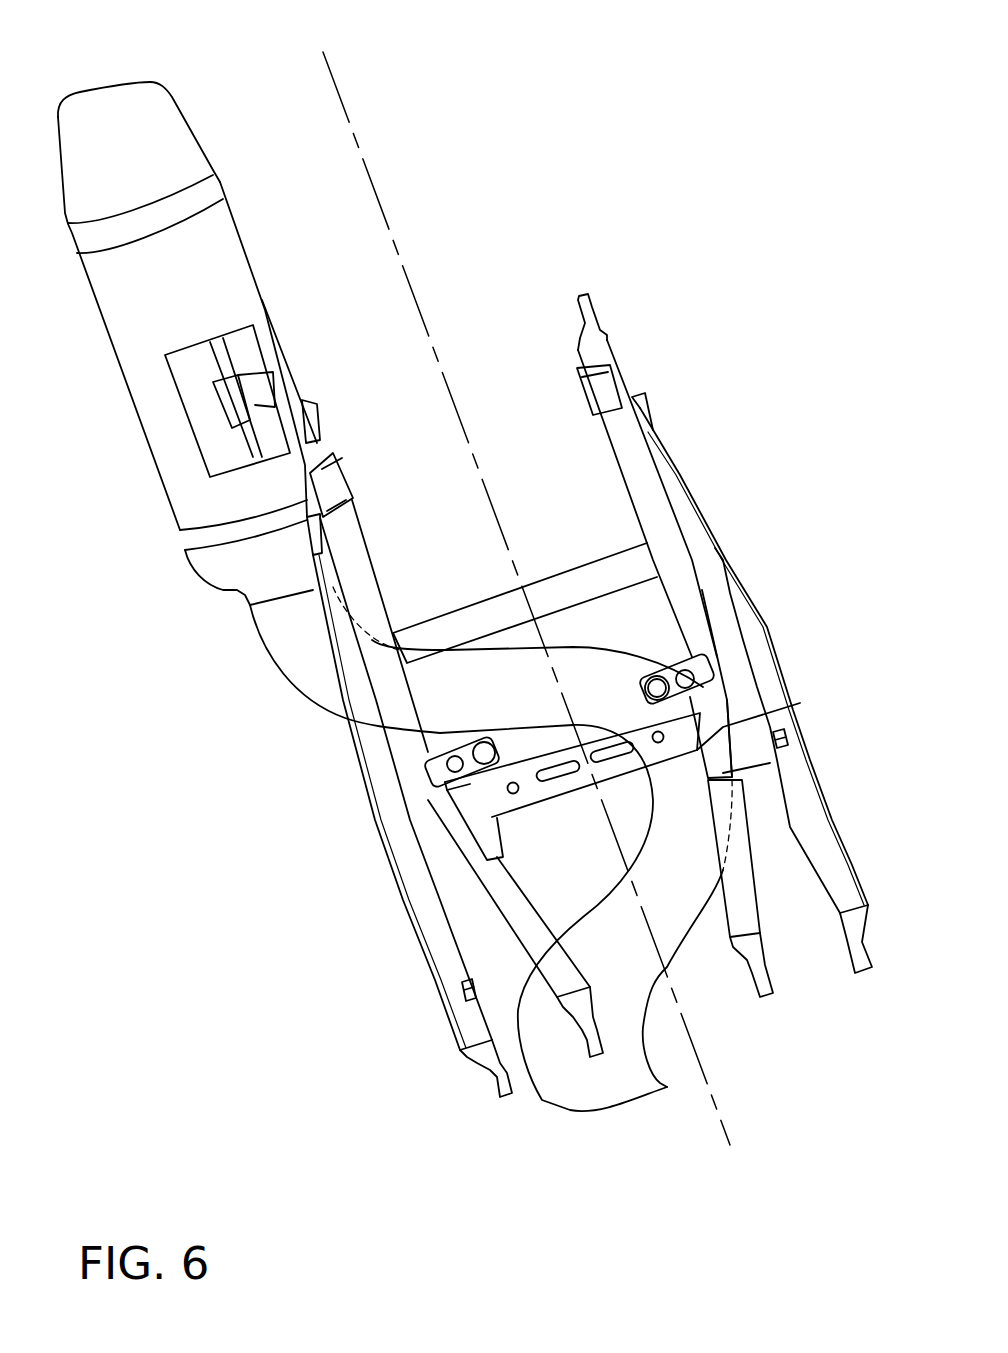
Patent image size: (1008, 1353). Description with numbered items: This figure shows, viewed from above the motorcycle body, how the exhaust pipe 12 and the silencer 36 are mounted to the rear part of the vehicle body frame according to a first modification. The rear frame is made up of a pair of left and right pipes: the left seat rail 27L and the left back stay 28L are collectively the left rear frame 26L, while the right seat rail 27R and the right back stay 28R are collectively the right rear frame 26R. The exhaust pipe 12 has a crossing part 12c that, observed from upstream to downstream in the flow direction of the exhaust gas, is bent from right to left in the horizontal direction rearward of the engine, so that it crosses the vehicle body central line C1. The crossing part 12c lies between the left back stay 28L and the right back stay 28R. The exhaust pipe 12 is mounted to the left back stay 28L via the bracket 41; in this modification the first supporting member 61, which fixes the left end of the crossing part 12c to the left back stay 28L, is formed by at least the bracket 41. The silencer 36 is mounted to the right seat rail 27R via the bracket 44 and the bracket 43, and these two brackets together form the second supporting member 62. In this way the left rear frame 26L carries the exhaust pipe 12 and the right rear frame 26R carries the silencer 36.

The vehicle body central line C1 is at (515, 584).
The silencer 36 is at (140, 417).
The bracket 44 is at (193, 348).
The second supporting member 62 is at (277, 352).
The bracket 43 is at (315, 437).
The crossing part 12c is at (583, 648).
The exhaust pipe 12 is at (730, 1045).
The bracket 41 is at (765, 773).
The first supporting member 61 is at (771, 716).
The right rear frame 26R is at (550, 1195).
The right seat rail 27R is at (537, 1118).
The right back stay 28R is at (437, 983).
The left rear frame 26L is at (900, 1033).
The left seat rail 27L is at (762, 922).
The left back stay 28L is at (863, 857).